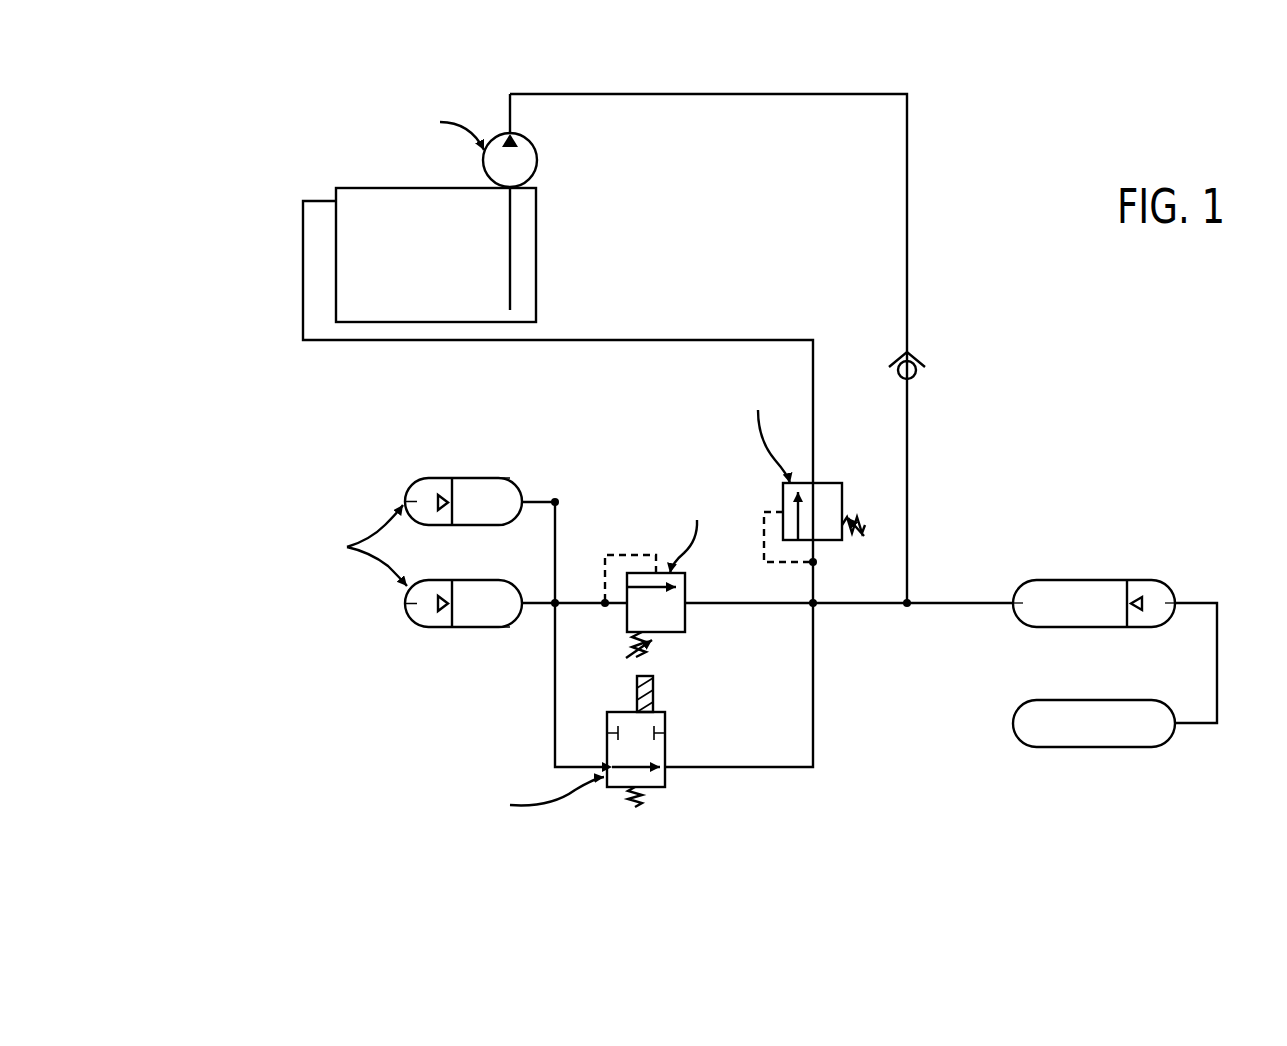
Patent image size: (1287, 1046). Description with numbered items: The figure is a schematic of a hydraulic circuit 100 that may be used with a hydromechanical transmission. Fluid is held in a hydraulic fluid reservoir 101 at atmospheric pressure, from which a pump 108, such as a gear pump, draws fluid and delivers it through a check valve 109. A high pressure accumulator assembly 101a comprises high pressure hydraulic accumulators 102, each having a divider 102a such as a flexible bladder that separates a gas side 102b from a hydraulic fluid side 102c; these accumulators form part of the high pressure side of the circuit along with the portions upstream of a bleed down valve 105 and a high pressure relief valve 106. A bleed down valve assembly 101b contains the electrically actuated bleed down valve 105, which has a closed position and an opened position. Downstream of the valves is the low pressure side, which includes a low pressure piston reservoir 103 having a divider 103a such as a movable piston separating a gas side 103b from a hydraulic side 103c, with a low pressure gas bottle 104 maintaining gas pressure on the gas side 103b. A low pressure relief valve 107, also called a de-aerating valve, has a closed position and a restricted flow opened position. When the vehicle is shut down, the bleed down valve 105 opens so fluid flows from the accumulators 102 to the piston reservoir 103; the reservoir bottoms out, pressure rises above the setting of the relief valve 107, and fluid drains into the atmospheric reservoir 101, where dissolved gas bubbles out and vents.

The hydraulic circuit 100 is at (998, 178).
The hydraulic fluid reservoir 101 is at (525, 270).
The high pressure accumulator assembly 101a is at (432, 428).
The bleed down valve assembly 101b is at (668, 842).
The high pressure hydraulic accumulators 102 is at (433, 551).
The divider 102a is at (452, 478).
The gas side 102b is at (406, 496).
The hydraulic fluid side 102c is at (500, 585).
The low pressure piston reservoir 103 is at (1175, 590).
The divider 103a is at (1127, 628).
The gas side 103b is at (1167, 615).
The hydraulic side 103c is at (1020, 613).
The low pressure gas bottle 104 is at (1170, 740).
The bleed down valve 105 is at (665, 726).
The high pressure relief valve 106 is at (685, 590).
The low pressure relief valve 107 is at (832, 541).
The pump 108 is at (537, 152).
The check valve 109 is at (921, 355).